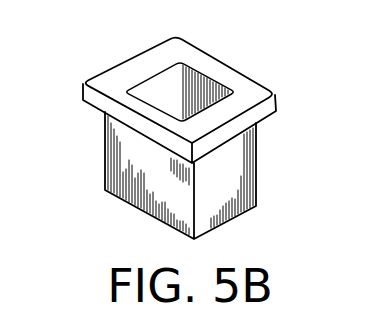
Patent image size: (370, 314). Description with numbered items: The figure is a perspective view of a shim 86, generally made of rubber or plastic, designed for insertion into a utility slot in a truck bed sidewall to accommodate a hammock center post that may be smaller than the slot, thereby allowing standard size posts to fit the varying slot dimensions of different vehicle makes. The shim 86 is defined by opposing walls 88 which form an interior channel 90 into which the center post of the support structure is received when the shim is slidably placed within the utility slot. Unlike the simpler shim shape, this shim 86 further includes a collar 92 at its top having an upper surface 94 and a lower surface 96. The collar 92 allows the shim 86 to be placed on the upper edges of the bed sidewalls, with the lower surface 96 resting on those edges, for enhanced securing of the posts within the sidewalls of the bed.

The shim 86 is at (68, 78).
The opposing walls 88 is at (237, 165).
The interior channel 90 is at (203, 82).
The collar 92 is at (253, 97).
The upper surface 94 is at (137, 62).
The lower surface 96 is at (95, 108).